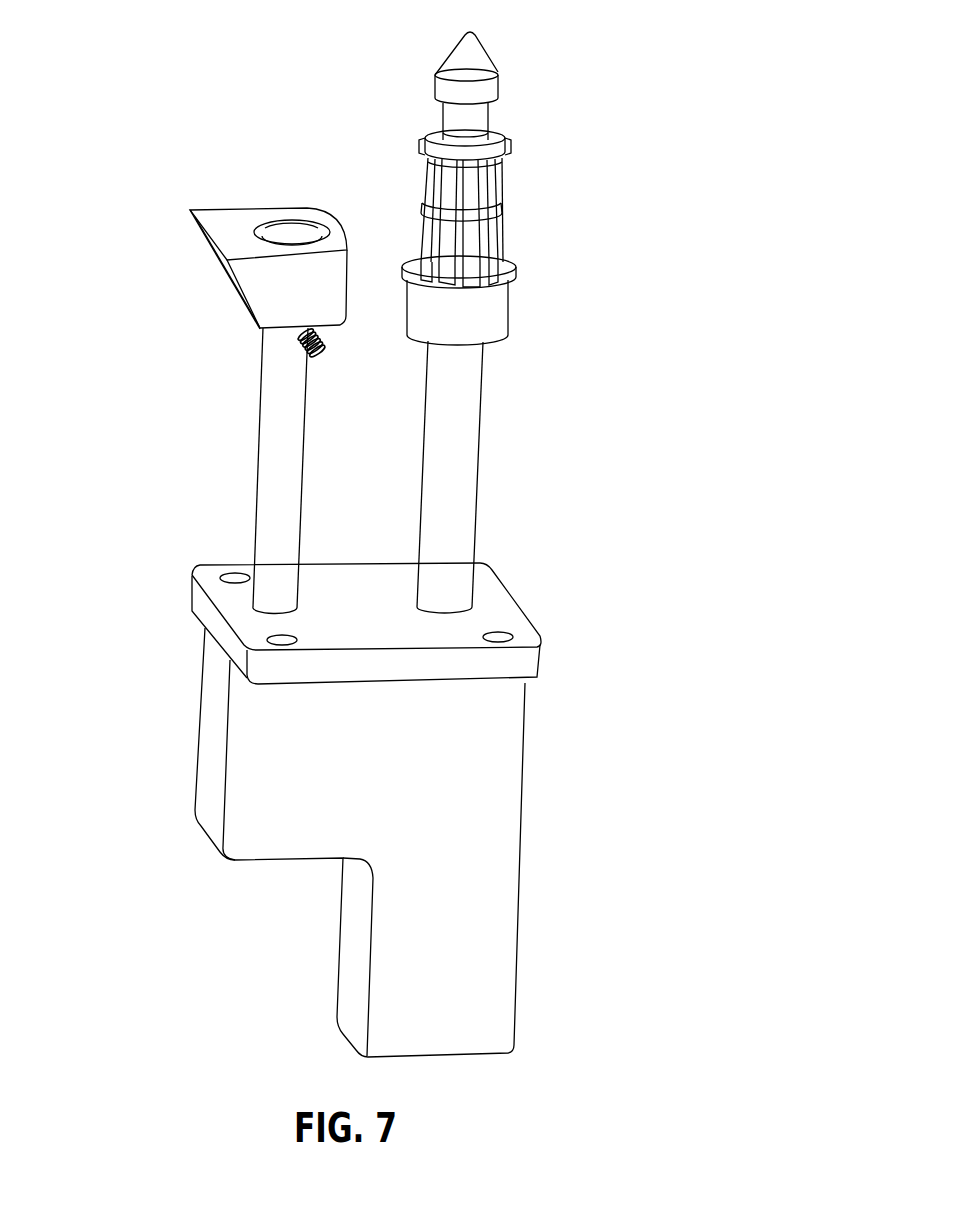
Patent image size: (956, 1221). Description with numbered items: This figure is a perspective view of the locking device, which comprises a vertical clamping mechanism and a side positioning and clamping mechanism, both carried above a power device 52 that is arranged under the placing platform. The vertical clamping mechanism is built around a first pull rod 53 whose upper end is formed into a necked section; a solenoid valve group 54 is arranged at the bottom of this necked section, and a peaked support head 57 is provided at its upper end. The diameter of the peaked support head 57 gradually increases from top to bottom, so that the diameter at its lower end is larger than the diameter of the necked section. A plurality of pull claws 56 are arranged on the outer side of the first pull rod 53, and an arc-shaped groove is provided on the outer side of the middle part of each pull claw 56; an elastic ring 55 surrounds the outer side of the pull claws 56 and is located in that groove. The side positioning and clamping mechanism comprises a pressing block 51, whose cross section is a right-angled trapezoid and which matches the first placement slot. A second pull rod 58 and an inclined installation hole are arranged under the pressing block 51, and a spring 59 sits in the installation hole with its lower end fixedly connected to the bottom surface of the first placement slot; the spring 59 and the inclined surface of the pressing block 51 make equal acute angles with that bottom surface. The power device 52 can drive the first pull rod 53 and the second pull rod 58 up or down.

The pressing block 51 is at (275, 287).
The power device 52 is at (459, 815).
The first pull rod 53 is at (465, 470).
The solenoid valve group 54 is at (488, 320).
The elastic ring 55 is at (500, 223).
The pull claws 56 is at (506, 185).
The peaked support head 57 is at (483, 72).
The second pull rod 58 is at (271, 522).
The spring 59 is at (288, 352).